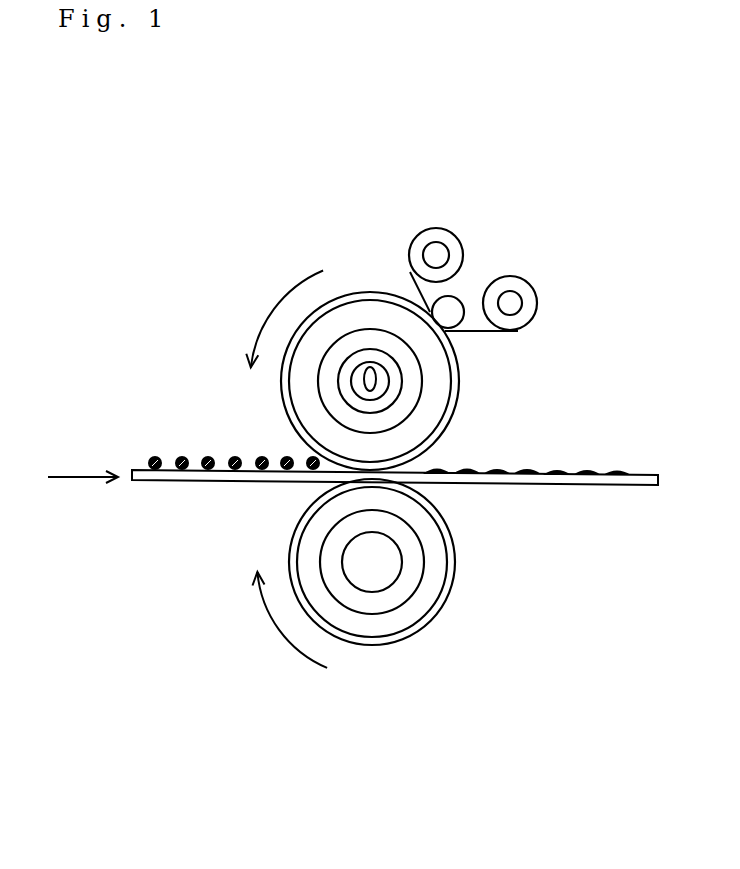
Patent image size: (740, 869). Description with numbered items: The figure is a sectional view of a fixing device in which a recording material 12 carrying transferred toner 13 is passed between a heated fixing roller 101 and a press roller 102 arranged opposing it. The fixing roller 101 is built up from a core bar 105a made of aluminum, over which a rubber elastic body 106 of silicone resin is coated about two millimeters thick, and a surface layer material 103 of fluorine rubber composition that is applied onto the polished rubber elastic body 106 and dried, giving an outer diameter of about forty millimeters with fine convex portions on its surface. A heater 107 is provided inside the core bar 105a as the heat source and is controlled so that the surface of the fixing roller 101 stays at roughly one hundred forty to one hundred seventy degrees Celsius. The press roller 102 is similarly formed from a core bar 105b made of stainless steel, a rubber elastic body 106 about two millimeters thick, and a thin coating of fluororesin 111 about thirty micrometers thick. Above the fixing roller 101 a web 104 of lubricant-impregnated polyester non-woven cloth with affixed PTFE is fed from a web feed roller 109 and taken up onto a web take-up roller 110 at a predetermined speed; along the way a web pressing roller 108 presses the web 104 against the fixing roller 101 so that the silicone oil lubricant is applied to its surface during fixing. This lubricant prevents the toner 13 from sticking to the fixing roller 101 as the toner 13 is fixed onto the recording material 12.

The fixing roller 101 is at (287, 332).
The press roller 102 is at (408, 647).
The surface layer material 103 is at (353, 297).
The web 104 is at (430, 310).
The core bar 105a is at (415, 372).
The core bar 105b is at (410, 542).
The rubber elastic body 106 is at (435, 412).
The heater 107 is at (352, 396).
The web pressing roller 108 is at (460, 298).
The web feed roller 109 is at (438, 232).
The web take-up roller 110 is at (515, 285).
The fluororesin 111 is at (435, 613).
The recording material 12 is at (147, 482).
The toner 13 is at (183, 458).